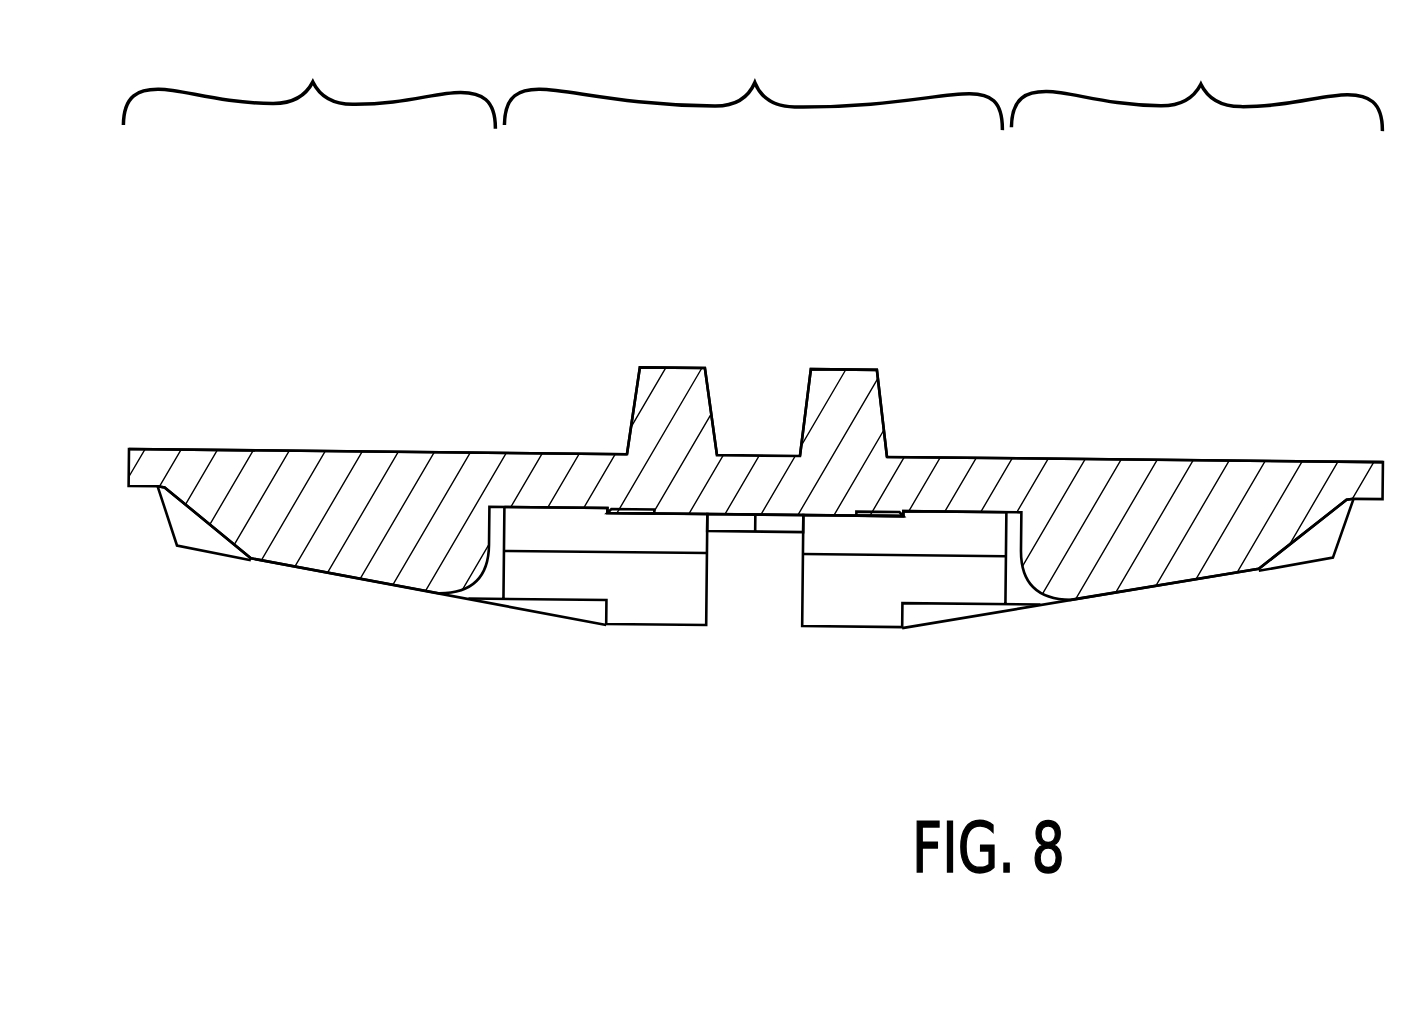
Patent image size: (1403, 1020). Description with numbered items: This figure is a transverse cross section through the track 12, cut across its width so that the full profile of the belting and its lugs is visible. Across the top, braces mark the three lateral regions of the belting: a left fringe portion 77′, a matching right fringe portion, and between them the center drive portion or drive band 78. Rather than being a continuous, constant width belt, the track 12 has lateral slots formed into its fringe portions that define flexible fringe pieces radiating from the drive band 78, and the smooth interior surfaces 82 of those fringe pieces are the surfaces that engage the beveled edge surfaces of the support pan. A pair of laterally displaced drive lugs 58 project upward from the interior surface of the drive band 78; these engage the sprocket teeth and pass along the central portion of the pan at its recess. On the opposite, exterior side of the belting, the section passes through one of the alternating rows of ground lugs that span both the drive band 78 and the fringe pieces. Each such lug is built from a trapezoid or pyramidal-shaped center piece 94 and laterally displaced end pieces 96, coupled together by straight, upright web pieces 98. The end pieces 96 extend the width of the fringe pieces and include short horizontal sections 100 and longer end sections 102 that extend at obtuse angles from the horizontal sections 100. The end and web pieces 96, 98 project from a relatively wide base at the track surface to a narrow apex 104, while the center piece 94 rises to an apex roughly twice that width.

The track 12 is at (1256, 434).
The drive lugs 58 is at (839, 366).
The left fringe portion 77′ is at (331, 37).
The center drive band 78 is at (753, 82).
The smooth interior surfaces 82 is at (1103, 461).
The center piece 94 is at (683, 552).
The end pieces 96 is at (1256, 610).
The web pieces 98 is at (938, 515).
The short horizontal sections 100 is at (1020, 607).
The longer end sections 102 is at (1203, 585).
The narrow apex 104 is at (1132, 593).